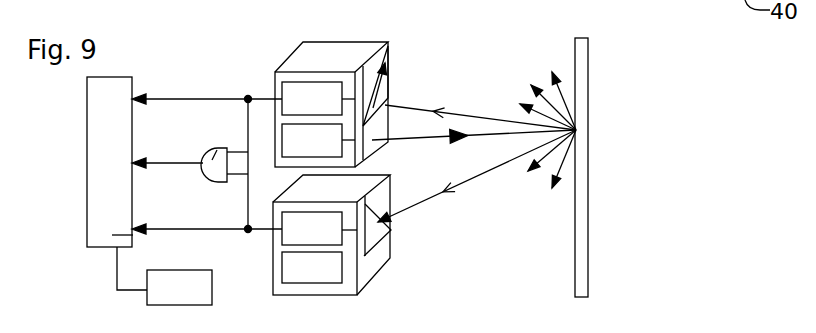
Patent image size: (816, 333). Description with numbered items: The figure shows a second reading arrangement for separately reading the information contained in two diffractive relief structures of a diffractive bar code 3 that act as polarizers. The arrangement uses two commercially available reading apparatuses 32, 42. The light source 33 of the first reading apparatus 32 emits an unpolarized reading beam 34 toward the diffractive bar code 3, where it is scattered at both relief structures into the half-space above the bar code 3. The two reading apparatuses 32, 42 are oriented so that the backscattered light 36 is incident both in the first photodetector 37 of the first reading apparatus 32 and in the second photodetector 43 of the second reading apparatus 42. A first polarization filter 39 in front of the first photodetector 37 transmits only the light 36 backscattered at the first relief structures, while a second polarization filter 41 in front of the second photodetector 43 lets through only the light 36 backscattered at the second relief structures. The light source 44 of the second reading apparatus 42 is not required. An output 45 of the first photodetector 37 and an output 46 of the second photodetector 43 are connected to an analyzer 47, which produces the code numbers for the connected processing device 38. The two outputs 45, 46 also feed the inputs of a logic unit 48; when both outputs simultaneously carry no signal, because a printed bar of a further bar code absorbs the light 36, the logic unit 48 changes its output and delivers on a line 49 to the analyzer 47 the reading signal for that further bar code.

The diffractive bar code 3 is at (580, 229).
The first reading apparatus 32 is at (363, 83).
The light source 33 is at (329, 155).
The reading beam 34 is at (398, 142).
The backscattered light 36 is at (507, 158).
The first photodetector 37 is at (329, 113).
The processing device 38 is at (204, 296).
The first polarization filter 39 is at (393, 84).
The second polarization filter 41 is at (390, 231).
The second reading apparatus 42 is at (329, 199).
The second photodetector 43 is at (329, 243).
The light source 44 is at (329, 281).
The output of the first photodetector 45 is at (160, 99).
The output of the second photodetector 46 is at (180, 228).
The analyzer 47 is at (133, 235).
The logic unit 48 is at (214, 159).
The line 49 is at (167, 161).